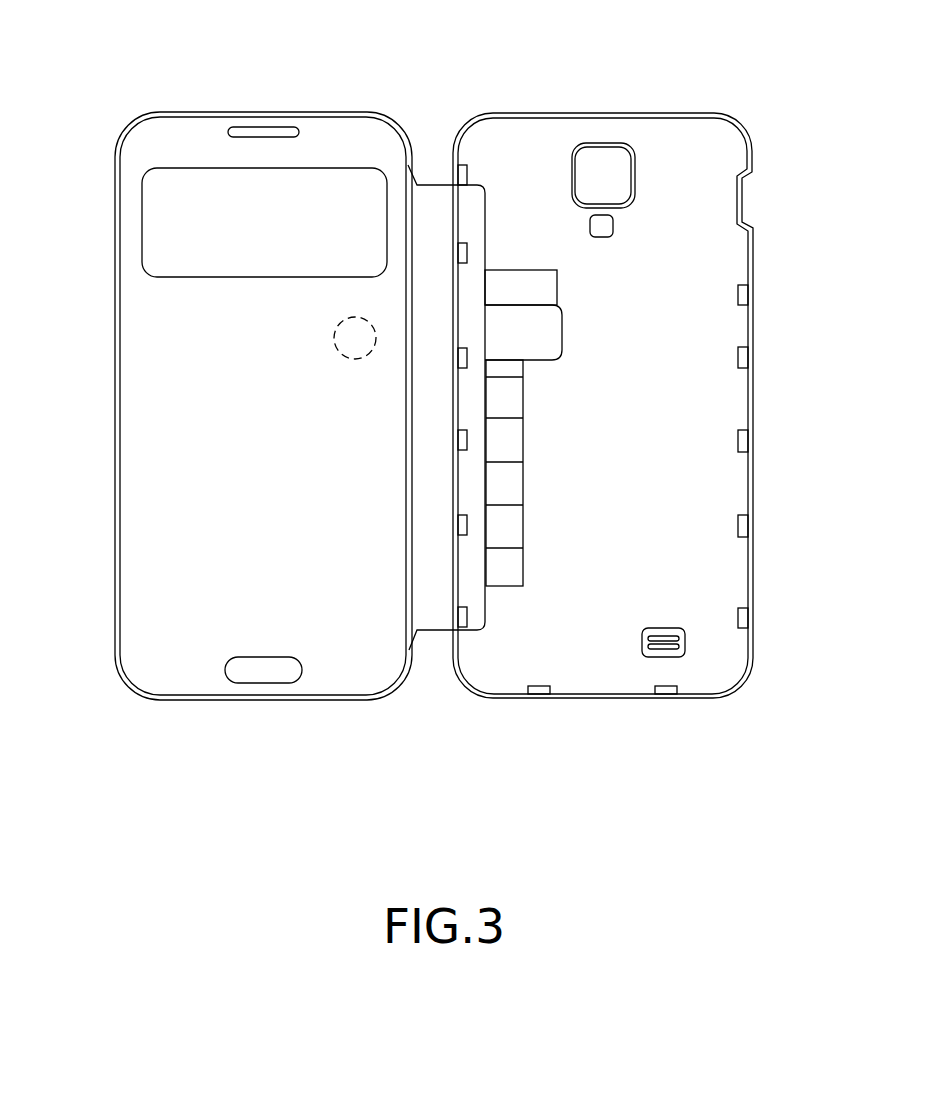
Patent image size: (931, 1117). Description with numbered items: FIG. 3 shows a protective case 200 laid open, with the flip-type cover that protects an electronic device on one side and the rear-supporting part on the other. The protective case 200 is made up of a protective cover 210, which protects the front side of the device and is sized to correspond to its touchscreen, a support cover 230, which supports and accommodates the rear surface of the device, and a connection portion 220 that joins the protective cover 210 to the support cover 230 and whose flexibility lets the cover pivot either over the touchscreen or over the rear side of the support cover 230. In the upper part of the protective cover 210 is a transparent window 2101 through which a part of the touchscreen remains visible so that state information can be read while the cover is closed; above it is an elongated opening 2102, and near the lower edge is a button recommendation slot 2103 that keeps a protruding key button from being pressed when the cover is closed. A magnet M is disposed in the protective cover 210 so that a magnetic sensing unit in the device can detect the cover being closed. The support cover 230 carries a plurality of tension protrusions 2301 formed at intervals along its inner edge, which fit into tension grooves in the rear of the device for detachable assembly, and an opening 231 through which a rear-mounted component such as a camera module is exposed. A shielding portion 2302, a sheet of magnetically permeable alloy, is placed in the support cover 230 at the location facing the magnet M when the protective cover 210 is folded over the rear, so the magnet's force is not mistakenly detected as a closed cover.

The protective case 200 is at (693, 108).
The protective cover 210 is at (115, 583).
The transparent window 2101 is at (160, 222).
The speaker opening 2102 is at (276, 131).
The button recommendation slot 2103 is at (260, 668).
The magnet M is at (360, 317).
The connection portion 220 is at (428, 620).
The support cover 230 is at (645, 695).
The opening 231 is at (600, 163).
The tension protrusions 2301 is at (745, 358).
The shielding portion 2302 is at (515, 303).